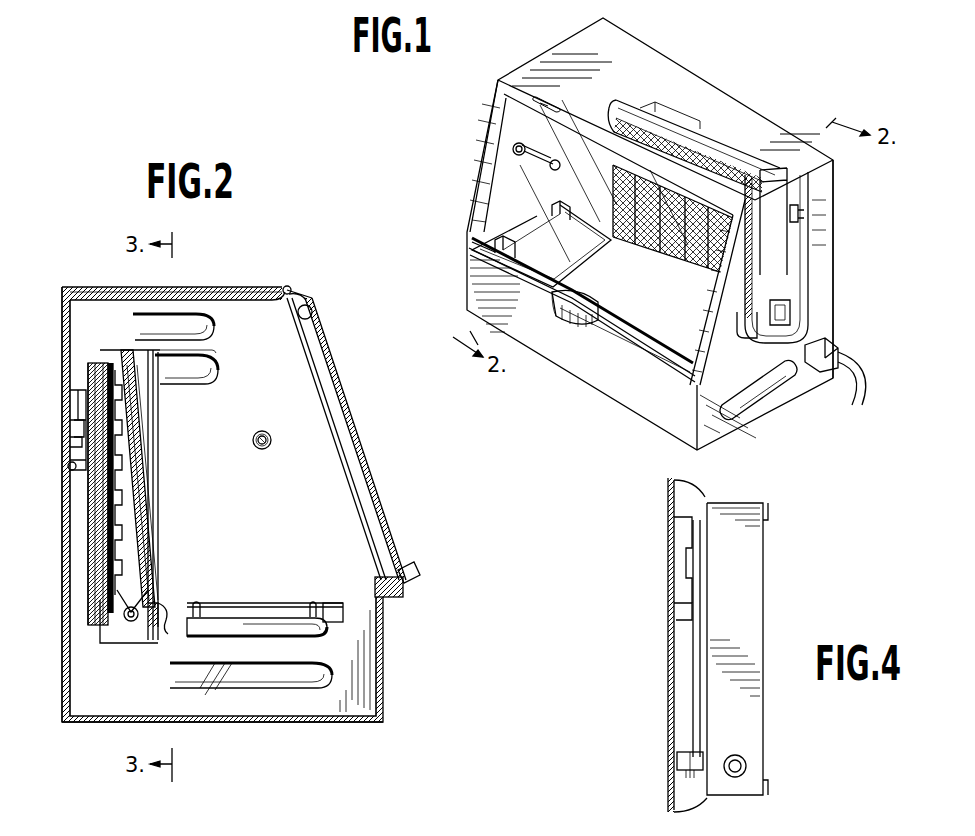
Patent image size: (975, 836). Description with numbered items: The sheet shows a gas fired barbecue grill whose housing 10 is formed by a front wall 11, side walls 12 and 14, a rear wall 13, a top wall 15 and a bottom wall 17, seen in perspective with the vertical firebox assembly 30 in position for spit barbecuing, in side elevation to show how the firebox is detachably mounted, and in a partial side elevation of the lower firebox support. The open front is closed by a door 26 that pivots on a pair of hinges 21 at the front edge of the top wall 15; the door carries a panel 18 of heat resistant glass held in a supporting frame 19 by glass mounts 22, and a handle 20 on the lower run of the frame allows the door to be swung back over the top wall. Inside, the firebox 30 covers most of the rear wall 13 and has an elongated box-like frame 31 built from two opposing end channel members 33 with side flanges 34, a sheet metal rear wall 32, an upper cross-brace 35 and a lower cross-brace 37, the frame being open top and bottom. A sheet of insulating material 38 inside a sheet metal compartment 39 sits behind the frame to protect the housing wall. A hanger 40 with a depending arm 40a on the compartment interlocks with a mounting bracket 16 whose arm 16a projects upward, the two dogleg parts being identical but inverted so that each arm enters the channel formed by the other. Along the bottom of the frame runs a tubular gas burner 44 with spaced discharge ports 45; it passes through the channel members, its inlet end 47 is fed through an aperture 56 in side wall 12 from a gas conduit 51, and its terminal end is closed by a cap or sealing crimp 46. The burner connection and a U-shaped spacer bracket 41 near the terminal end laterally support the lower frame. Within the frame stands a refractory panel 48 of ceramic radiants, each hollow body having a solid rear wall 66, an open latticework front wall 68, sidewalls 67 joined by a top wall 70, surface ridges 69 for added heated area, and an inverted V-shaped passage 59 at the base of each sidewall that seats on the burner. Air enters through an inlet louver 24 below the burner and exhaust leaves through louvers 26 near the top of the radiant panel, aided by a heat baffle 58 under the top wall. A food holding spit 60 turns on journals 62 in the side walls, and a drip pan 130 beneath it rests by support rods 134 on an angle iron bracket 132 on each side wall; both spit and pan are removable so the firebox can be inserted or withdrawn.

In FIG. 1, the barbecue grill housing 10 is at (575, 383).
In FIG. 1, the front wall 11 is at (648, 408).
In FIG. 2, the front wall 11 is at (384, 706).
In FIG. 1, the side wall 12 is at (718, 428).
In FIG. 2, the side wall 12 is at (286, 515).
In FIG. 1, the rear wall 13 is at (805, 268).
In FIG. 2, the rear wall 13 is at (64, 493).
In FIG. 4, the rear wall 13 is at (667, 676).
In FIG. 1, the side wall 14 is at (494, 174).
In FIG. 1, the top wall 15 is at (608, 53).
In FIG. 2, the top wall 15 is at (263, 287).
In FIG. 1, the mounting bracket 16 is at (808, 212).
In FIG. 2, the mounting bracket 16 is at (68, 465).
In FIG. 4, the mounting bracket 16 is at (680, 622).
In FIG. 2, the bracket arm 16a is at (84, 443).
In FIG. 1, the bottom wall 17 is at (611, 318).
In FIG. 2, the bottom wall 17 is at (289, 723).
In FIG. 2, the panel 18 is at (350, 420).
In FIG. 1, the supporting frame 19 is at (492, 115).
In FIG. 2, the supporting frame 19 is at (308, 300).
In FIG. 1, the handle 20 is at (562, 316).
In FIG. 2, the handle 20 is at (420, 575).
In FIG. 1, the hinge 21 is at (552, 104).
In FIG. 2, the hinge 21 is at (289, 286).
In FIG. 2, the glass mount 22 is at (315, 318).
In FIG. 2, the air inlet louver 24 is at (275, 689).
In FIG. 1, the door 26 is at (650, 367).
In FIG. 2, the door 26 is at (212, 330).
In FIG. 1, the vertical firebox assembly 30 is at (737, 136).
In FIG. 1, the frame 31 is at (797, 243).
In FIG. 4, the frame 31 is at (752, 590).
In FIG. 2, the rear wall 32 is at (100, 590).
In FIG. 1, the end channel member 33 is at (746, 322).
In FIG. 2, the end channel member 33 is at (152, 421).
In FIG. 2, the side flange 34 is at (160, 442).
In FIG. 1, the upper cross-brace 35 is at (785, 298).
In FIG. 2, the upper cross-brace 35 is at (205, 358).
In FIG. 2, the lower cross-brace 37 is at (166, 636).
In FIG. 2, the insulating material 38 is at (100, 527).
In FIG. 2, the sheet metal compartment 39 is at (88, 510).
In FIG. 2, the hanger 40 is at (82, 405).
In FIG. 4, the hanger 40 is at (686, 563).
In FIG. 2, the hanger arm 40a is at (84, 425).
In FIG. 4, the U-shaped spacer bracket 41 is at (678, 762).
In FIG. 2, the tubular gas burner 44 is at (131, 622).
In FIG. 2, the gas discharge port 45 is at (147, 590).
In FIG. 4, the cap or sealing crimp 46 is at (745, 760).
In FIG. 1, the inlet end 47 is at (792, 307).
In FIG. 1, the refractory panel 48 is at (690, 127).
In FIG. 1, the gas conduit 51 is at (875, 386).
In FIG. 1, the aperture 56 is at (824, 338).
In FIG. 2, the heat baffle 58 is at (240, 288).
In FIG. 2, the inverted V-shaped passage 59 is at (152, 606).
In FIG. 1, the food holding spit 60 is at (558, 168).
In FIG. 2, the food holding spit 60 is at (270, 446).
In FIG. 1, the journal 62 is at (518, 152).
In FIG. 2, the journal 62 is at (265, 432).
In FIG. 2, the rear wall 66 is at (112, 562).
In FIG. 2, the sidewall 67 is at (140, 520).
In FIG. 2, the latticework front wall 68 is at (152, 550).
In FIG. 2, the surface ridges or projections 69 is at (126, 481).
In FIG. 2, the top wall 70 is at (125, 352).
In FIG. 1, the drip pan 130 is at (590, 268).
In FIG. 2, the drip pan 130 is at (310, 638).
In FIG. 1, the angle iron bracket 132 is at (478, 244).
In FIG. 2, the angle iron bracket 132 is at (350, 606).
In FIG. 1, the support rod 134 is at (538, 232).
In FIG. 2, the support rod 134 is at (200, 607).